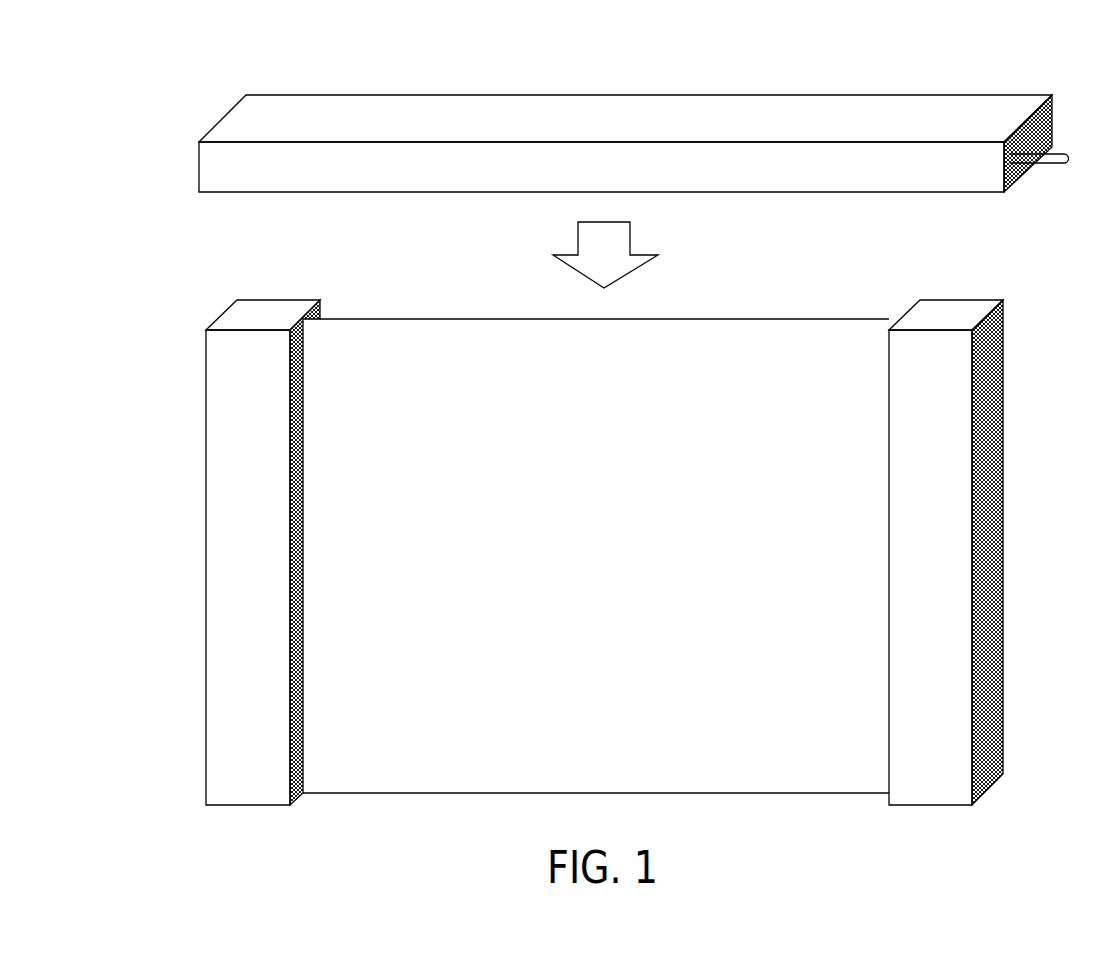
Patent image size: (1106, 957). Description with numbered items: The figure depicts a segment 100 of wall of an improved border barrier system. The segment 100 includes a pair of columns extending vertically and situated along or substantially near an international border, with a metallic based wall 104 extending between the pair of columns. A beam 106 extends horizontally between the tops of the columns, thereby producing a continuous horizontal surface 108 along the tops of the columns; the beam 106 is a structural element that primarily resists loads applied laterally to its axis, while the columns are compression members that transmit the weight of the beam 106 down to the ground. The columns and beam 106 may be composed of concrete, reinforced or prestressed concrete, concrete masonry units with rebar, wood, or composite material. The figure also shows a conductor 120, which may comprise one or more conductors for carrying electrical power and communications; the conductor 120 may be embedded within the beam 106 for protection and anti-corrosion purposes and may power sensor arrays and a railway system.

The segment 100 is at (187, 262).
The metallic based wall 104 is at (722, 318).
The beam 106 is at (1022, 92).
The continuous horizontal surface 108 is at (907, 130).
The conductor 120 is at (1058, 164).